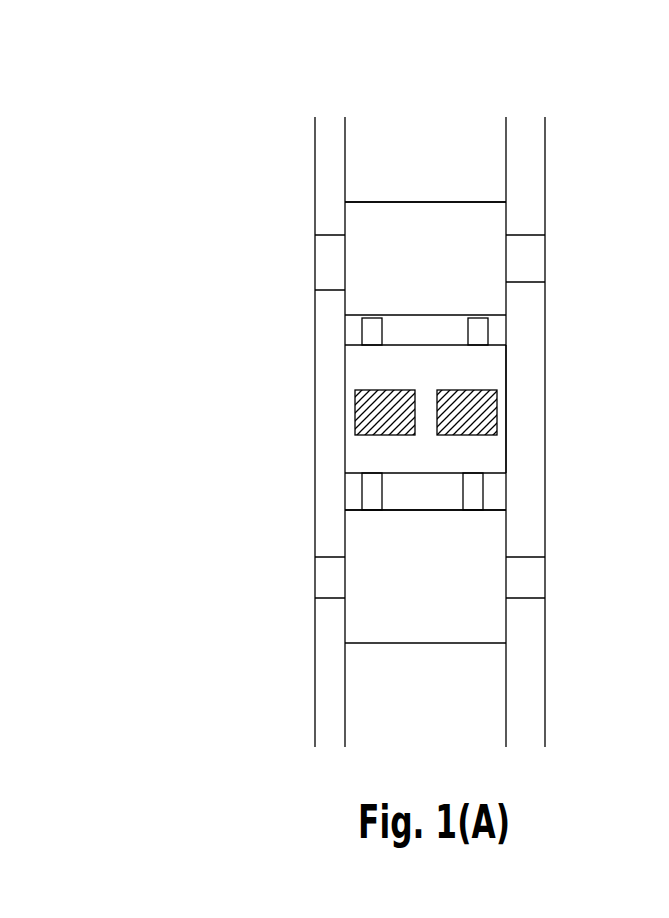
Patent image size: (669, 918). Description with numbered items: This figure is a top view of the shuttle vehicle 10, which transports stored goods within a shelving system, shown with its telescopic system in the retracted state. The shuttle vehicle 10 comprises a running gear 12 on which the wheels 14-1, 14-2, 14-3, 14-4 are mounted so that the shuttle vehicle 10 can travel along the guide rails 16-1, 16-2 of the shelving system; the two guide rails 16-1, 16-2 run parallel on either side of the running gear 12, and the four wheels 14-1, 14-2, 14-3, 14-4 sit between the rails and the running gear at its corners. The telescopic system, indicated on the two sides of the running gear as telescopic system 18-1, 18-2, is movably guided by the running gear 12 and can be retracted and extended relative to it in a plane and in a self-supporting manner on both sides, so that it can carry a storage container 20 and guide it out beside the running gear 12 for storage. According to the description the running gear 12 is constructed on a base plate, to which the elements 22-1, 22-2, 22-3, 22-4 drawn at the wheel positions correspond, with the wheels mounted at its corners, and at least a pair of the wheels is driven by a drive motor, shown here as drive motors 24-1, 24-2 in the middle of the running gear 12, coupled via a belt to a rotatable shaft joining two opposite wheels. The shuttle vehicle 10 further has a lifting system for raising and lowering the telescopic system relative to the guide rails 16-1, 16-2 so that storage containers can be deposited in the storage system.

The shuttle vehicle 10 is at (238, 148).
The running gear 12 is at (477, 202).
The wheel 14-1 is at (315, 262).
The wheel 14-2 is at (315, 578).
The wheel 14-3 is at (545, 262).
The wheel 14-4 is at (545, 578).
The guide rail 16-1 is at (345, 158).
The guide rail 16-2 is at (545, 158).
The first chamber 18-1 is at (429, 315).
The second chamber 18-2 is at (429, 510).
The housing 20 is at (508, 457).
The first seal 22-1 is at (362, 328).
The second seal 22-2 is at (488, 328).
The third seal 22-3 is at (362, 493).
The fourth seal 22-4 is at (483, 500).
The first sensor element 24-1 is at (355, 418).
The second sensor element 24-2 is at (497, 415).